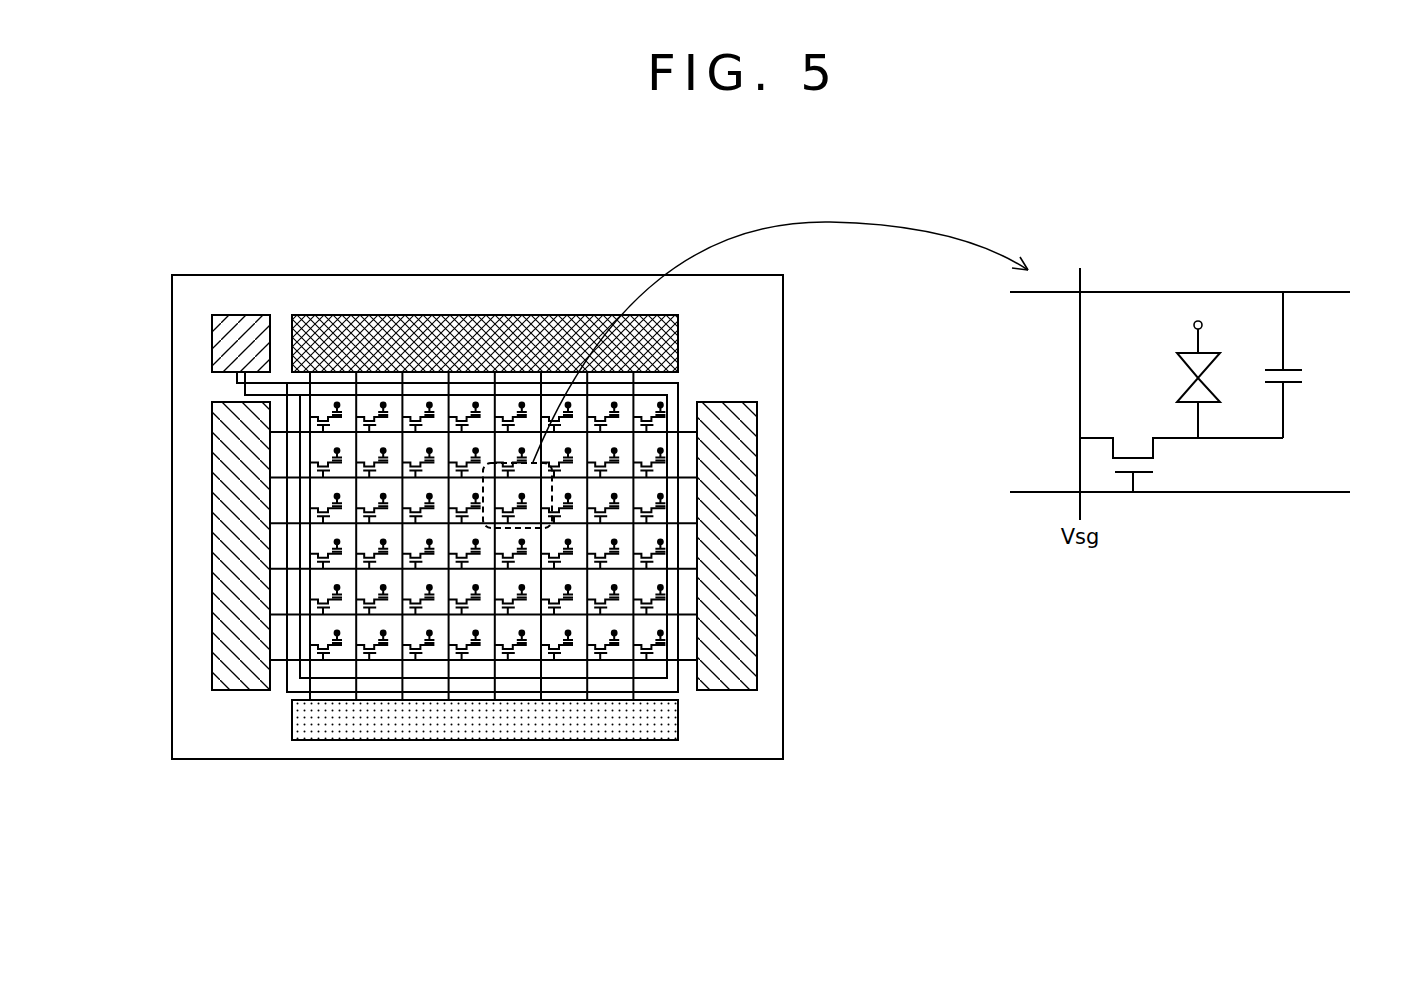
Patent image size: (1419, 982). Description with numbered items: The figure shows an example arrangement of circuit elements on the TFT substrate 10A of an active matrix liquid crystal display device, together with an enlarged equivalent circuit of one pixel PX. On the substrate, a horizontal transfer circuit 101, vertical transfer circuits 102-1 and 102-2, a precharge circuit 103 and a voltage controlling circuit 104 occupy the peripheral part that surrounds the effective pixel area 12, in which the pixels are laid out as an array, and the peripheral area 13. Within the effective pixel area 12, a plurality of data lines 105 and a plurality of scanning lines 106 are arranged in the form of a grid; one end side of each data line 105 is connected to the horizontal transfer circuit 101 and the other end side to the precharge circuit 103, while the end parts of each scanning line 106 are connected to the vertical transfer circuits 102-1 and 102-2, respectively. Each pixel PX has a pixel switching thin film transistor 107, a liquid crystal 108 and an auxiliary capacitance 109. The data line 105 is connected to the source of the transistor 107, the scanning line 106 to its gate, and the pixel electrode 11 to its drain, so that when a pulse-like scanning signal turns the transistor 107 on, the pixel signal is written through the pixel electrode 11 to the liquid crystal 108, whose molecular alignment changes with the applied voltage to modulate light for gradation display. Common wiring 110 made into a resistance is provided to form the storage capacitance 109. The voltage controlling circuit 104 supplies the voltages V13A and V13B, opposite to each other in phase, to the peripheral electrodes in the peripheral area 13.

The TFT substrate 10A is at (537, 164).
The effective pixel area 12 is at (487, 605).
The peripheral area 13 is at (680, 683).
The horizontal transfer circuit 101 is at (484, 340).
The vertical transfer circuit 102-1 is at (235, 530).
The vertical transfer circuit 102-2 is at (733, 472).
The precharge circuit 103 is at (357, 725).
The voltage controlling circuit 104 is at (237, 323).
The data line 105 is at (635, 487).
The scanning line 106 is at (568, 662).
The pixel switching thin film transistor 107 is at (597, 560).
The liquid crystal 108 is at (1195, 389).
The auxiliary capacitance 109 is at (1305, 375).
The common wiring 110 is at (1203, 292).
The pixel electrode 11 is at (1210, 405).
The voltage applied to first peripheral electrode V13A is at (275, 380).
The voltage applied to second peripheral electrode V13B is at (237, 388).
The pixel PX is at (1211, 230).